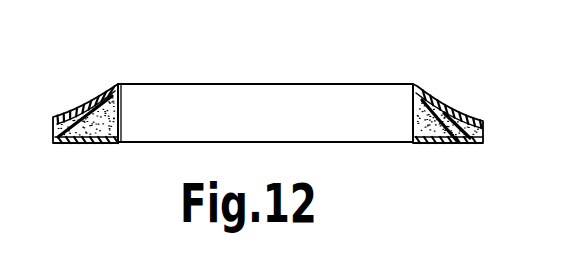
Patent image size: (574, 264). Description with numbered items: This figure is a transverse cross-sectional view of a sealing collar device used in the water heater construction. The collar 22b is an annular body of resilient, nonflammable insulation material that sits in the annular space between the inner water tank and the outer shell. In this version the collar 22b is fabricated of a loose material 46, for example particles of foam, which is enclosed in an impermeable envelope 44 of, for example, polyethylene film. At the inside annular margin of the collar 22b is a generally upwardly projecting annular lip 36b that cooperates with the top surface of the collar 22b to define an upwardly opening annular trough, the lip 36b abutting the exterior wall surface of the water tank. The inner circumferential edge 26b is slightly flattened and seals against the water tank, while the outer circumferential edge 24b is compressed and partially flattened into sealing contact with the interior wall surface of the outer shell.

The collar 22b is at (352, 76).
The annular lip 36b is at (97, 100).
The inner circumferential edge 26b is at (122, 131).
The loose material 46 is at (447, 114).
The impermeable envelope 44 is at (472, 122).
The outer circumferential edge 24b is at (485, 134).